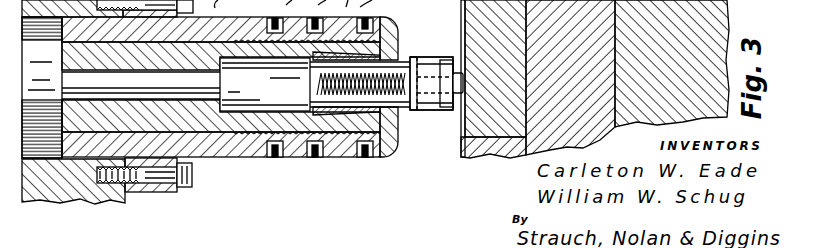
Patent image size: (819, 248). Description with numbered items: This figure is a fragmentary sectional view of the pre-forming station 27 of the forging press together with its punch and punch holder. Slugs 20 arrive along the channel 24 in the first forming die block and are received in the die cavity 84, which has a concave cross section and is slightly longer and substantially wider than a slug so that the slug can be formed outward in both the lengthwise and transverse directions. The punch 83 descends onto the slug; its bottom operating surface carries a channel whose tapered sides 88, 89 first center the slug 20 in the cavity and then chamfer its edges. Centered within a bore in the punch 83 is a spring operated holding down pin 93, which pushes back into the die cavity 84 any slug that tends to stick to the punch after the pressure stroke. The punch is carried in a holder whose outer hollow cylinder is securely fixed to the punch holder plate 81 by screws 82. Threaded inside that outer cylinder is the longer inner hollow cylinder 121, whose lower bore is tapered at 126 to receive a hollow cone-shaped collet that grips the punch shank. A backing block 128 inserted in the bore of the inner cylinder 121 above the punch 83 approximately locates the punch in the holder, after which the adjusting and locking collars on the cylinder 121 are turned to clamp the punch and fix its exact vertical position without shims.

The slug 20 is at (466, 90).
The channel 24 is at (458, 19).
The pre-forming station 27 is at (459, 119).
The punch holder plate 81 is at (83, 201).
The screws 82 is at (188, 188).
The punch 83 is at (424, 108).
The die cavity 84 is at (466, 80).
The tapered side 88 is at (447, 104).
The tapered side 89 is at (433, 57).
The spring operated holding down pin 93 is at (425, 56).
The inner hollow cylinder 121 is at (210, 158).
The tapered bore portion 126 is at (338, 133).
The backing block 128 is at (265, 84).